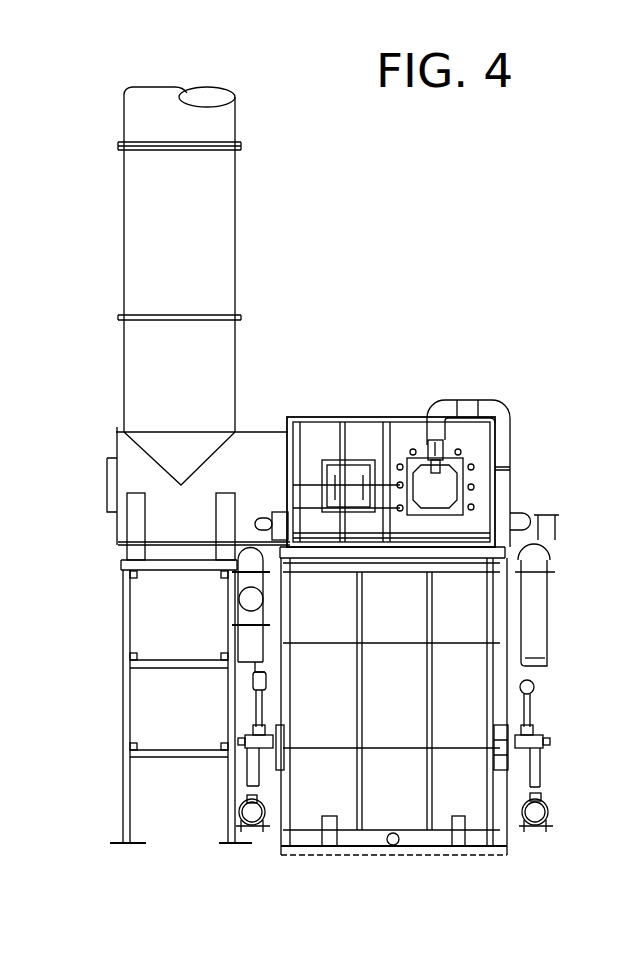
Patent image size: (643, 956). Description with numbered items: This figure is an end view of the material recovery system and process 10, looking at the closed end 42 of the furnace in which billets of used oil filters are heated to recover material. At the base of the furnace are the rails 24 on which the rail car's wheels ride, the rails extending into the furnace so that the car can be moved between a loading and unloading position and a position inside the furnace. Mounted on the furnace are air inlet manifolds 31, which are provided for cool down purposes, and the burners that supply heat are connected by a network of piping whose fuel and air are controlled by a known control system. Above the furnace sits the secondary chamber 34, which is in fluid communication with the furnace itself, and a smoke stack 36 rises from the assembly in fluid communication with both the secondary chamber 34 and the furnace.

The material recovery system and process 10 is at (390, 297).
The rails 24 is at (328, 840).
The air inlet manifolds 31 is at (257, 735).
The secondary chamber 34 is at (380, 417).
The smoke stack 36 is at (212, 242).
The closed end 42 is at (388, 622).